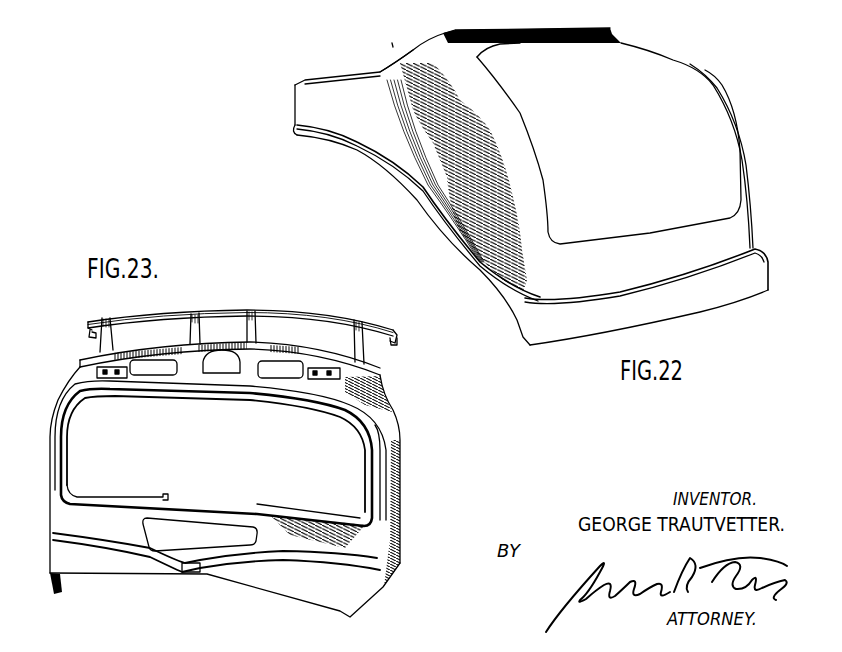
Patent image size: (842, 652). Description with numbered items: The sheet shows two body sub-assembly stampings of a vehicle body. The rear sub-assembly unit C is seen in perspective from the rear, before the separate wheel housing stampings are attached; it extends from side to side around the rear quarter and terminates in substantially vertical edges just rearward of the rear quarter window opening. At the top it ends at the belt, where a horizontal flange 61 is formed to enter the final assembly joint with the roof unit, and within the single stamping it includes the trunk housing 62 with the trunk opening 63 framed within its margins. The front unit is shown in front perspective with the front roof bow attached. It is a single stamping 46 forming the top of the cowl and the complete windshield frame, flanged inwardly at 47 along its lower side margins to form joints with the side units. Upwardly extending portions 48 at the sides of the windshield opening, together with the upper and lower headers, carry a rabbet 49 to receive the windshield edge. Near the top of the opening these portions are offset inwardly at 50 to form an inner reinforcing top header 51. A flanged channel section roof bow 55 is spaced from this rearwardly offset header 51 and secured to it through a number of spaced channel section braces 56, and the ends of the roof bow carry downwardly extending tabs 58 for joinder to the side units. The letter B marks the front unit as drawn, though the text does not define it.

In FIG. 23, the front unit stamping 46 is at (408, 526).
In FIG. 23, the inward flange 47 is at (62, 590).
In FIG. 23, the upwardly extending portions 48 is at (53, 462).
In FIG. 23, the rabbet 49 is at (377, 502).
In FIG. 23, the inward offset 50 is at (57, 416).
In FIG. 23, the inner reinforcing top header 51 is at (248, 380).
In FIG. 23, the roof bow 55 is at (347, 313).
In FIG. 23, the channel section braces 56 is at (255, 333).
In FIG. 23, the downwardly extending tabs 58 is at (88, 338).
In FIG. 23, the rear body panel B is at (398, 410).
In FIG. 22, the horizontal flange 61 is at (393, 67).
In FIG. 22, the trunk housing 62 is at (672, 62).
In FIG. 22, the trunk opening 63 is at (716, 84).
In FIG. 22, the rear sub-assembly unit C is at (733, 123).